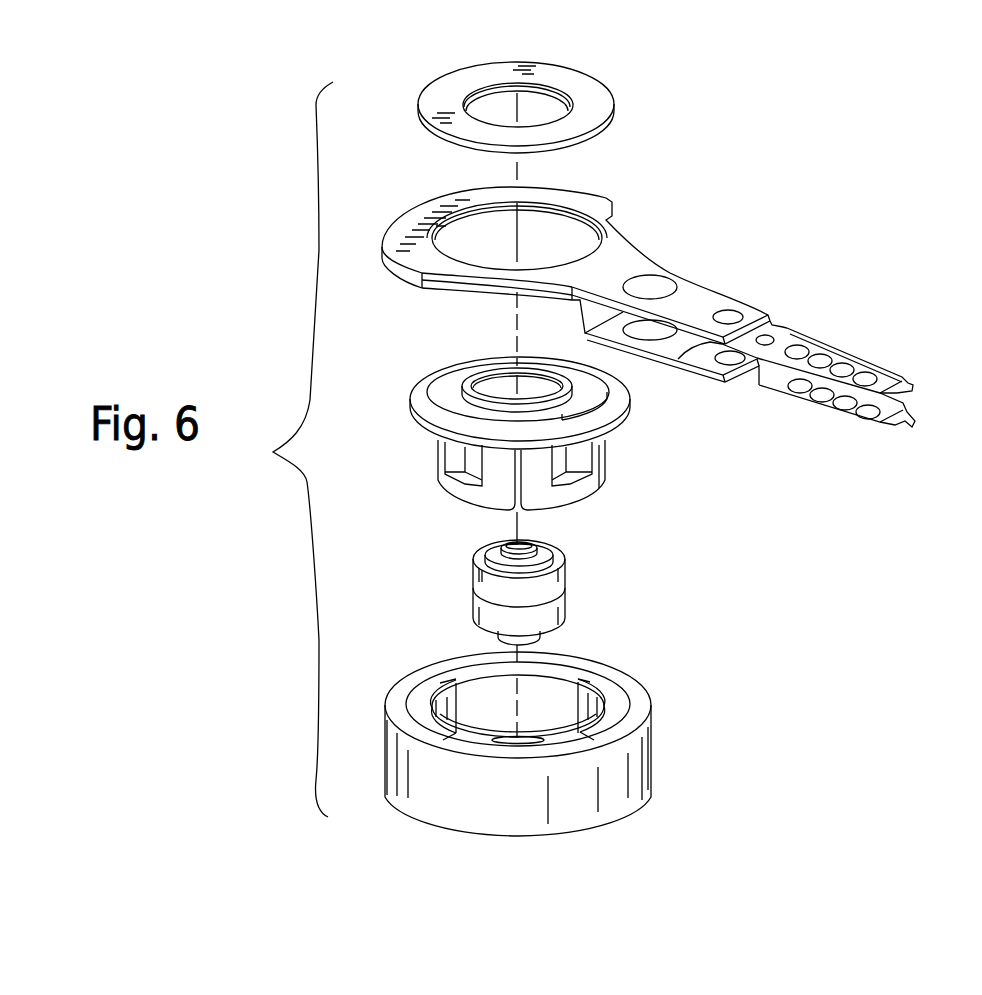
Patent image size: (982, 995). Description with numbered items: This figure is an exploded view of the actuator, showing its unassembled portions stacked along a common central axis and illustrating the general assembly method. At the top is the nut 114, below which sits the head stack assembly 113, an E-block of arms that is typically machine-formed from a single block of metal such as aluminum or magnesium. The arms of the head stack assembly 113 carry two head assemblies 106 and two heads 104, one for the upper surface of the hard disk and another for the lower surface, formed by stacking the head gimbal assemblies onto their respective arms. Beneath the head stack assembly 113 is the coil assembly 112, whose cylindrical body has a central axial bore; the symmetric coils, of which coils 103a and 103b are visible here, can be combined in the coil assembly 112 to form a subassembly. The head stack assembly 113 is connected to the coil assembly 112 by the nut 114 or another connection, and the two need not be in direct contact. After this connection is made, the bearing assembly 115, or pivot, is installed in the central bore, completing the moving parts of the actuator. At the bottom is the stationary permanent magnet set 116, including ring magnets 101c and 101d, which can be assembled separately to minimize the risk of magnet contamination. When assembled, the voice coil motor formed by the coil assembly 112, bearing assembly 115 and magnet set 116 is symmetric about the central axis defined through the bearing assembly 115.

The nut 114 is at (588, 103).
The head stack assembly 113 is at (622, 262).
The head assembly 106 is at (813, 348).
The head 104 is at (913, 383).
The coil assembly 112 is at (501, 447).
The coil 103a is at (453, 488).
The coil 103b is at (578, 488).
The bearing assembly 115 is at (487, 586).
The ring magnet 101c is at (420, 705).
The ring magnet 101d is at (613, 700).
The permanent magnet set 116 is at (530, 735).